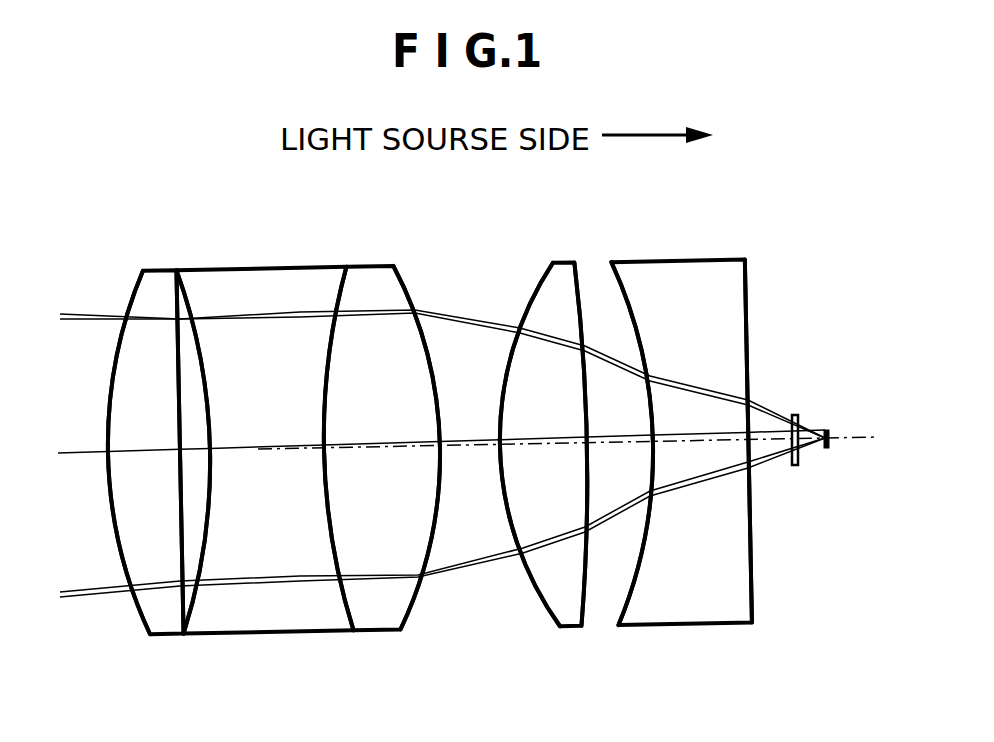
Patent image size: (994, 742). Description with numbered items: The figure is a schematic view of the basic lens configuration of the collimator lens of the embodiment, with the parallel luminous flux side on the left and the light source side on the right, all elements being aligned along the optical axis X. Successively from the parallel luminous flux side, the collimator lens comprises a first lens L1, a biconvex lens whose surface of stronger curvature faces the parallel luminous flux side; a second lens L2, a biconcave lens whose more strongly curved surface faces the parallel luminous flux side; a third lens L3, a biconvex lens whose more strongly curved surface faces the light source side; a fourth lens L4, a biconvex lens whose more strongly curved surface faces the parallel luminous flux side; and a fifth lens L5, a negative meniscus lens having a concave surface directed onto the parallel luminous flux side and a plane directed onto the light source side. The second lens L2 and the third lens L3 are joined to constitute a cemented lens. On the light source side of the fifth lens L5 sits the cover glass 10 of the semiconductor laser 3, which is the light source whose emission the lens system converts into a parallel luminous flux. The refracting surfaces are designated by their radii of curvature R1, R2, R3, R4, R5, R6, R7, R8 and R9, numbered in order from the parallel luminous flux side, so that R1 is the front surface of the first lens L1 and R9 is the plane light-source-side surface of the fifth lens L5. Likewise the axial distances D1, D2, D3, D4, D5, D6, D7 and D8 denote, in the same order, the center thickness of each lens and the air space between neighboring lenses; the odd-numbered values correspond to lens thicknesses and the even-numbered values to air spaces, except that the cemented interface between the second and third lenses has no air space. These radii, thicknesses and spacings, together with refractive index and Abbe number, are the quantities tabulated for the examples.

The first lens L1 is at (157, 268).
The second lens L2 is at (272, 268).
The third lens L3 is at (386, 268).
The fourth lens L4 is at (560, 262).
The fifth lens L5 is at (695, 260).
The lens surface radius of curvature R1 is at (137, 593).
The lens surface radius of curvature R2 is at (185, 547).
The lens surface radius of curvature R3 is at (200, 488).
The lens surface radius of curvature R4 is at (345, 610).
The lens surface radius of curvature R5 is at (412, 607).
The lens surface radius of curvature R6 is at (533, 582).
The lens surface radius of curvature R7 is at (587, 603).
The lens surface radius of curvature R8 is at (623, 602).
The lens surface radius of curvature R9 is at (752, 592).
The center thickness / air space D1 is at (137, 456).
The center thickness / air space D2 is at (194, 452).
The center thickness / air space D3 is at (285, 447).
The center thickness / air space D4 is at (358, 447).
The center thickness / air space D5 is at (455, 447).
The center thickness / air space D6 is at (523, 442).
The center thickness / air space D7 is at (605, 440).
The center thickness / air space D8 is at (690, 440).
The optical axis X is at (84, 458).
The cover glass 10 is at (795, 466).
The semiconductor laser 3 is at (826, 452).